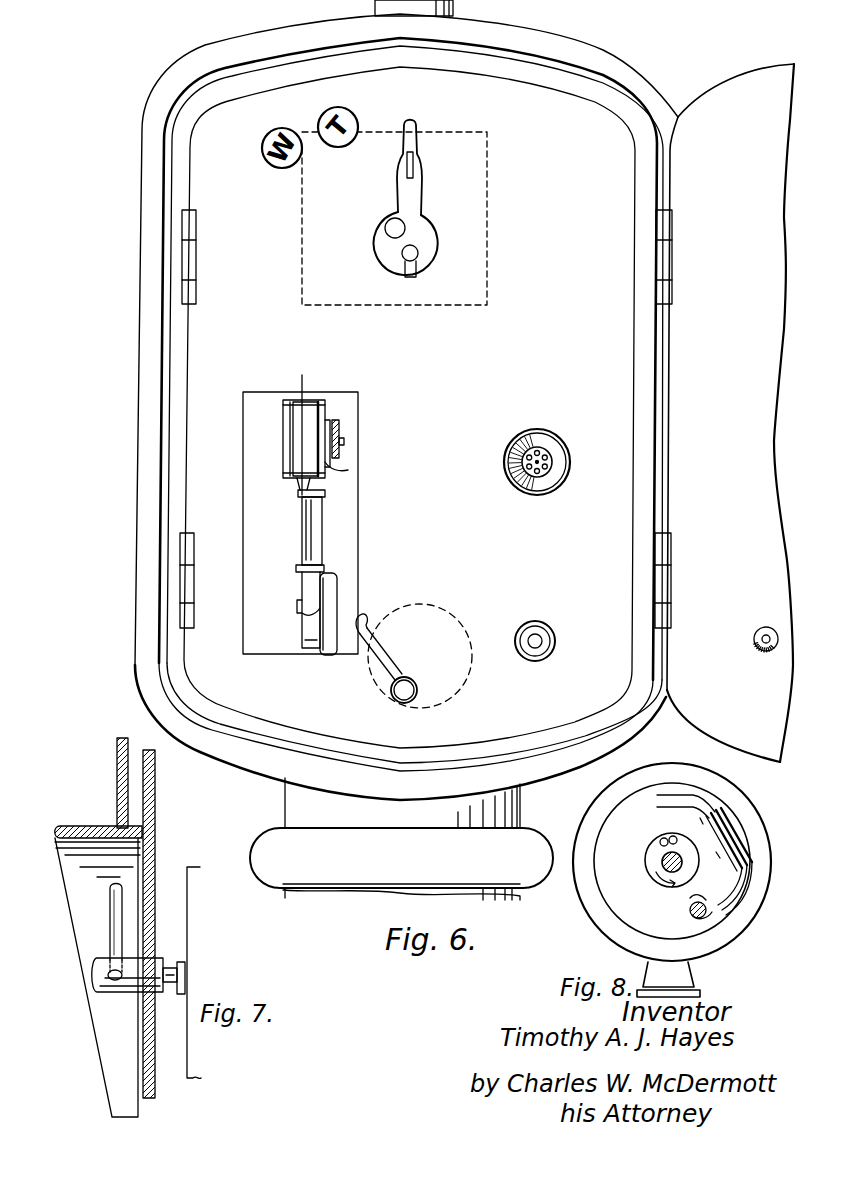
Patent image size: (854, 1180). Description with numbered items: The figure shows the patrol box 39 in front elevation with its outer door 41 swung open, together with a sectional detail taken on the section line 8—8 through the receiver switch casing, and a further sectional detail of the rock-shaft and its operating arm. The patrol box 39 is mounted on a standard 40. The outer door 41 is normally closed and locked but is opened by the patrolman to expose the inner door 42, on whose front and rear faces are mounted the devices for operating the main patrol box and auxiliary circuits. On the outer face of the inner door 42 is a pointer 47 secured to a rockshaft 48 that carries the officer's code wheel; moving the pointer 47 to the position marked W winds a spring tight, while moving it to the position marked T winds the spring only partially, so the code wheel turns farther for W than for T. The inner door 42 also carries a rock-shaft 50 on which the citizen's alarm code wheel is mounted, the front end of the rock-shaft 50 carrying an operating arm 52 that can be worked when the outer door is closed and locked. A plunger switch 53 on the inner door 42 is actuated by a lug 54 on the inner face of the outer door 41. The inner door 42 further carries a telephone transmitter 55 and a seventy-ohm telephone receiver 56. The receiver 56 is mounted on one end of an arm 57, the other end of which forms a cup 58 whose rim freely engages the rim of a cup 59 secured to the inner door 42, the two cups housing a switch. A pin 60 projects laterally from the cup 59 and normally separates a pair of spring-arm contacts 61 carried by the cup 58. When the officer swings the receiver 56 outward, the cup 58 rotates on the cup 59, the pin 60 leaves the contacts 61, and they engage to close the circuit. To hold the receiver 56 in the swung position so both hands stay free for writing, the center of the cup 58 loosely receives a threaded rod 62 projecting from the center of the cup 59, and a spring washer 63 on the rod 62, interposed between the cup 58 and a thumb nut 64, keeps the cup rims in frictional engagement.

In FIG. 6, the section line 8— 8 is at (302, 375).
In FIG. 6, the patrol box 39 is at (147, 527).
In FIG. 6, the standard 40 is at (267, 845).
In FIG. 6, the outer door 41 is at (723, 96).
In FIG. 7, the outer door 41 is at (118, 773).
In FIG. 6, the inner door 42 is at (205, 130).
In FIG. 7, the inner door 42 is at (155, 792).
In FIG. 6, the pointer 47 is at (412, 202).
In FIG. 6, the rockshaft 48 is at (414, 257).
In FIG. 6, the rock-shaft 50 is at (403, 697).
In FIG. 7, the rock-shaft 50 is at (168, 963).
In FIG. 6, the operating arm 52 is at (365, 655).
In FIG. 7, the operating arm 52 is at (107, 912).
In FIG. 6, the plunger switch 53 is at (537, 641).
In FIG. 6, the lug 54 is at (763, 635).
In FIG. 6, the telephone transmitter 55 is at (550, 470).
In FIG. 6, the telephone receiver 56 is at (335, 593).
In FIG. 6, the arm 57 is at (317, 543).
In FIG. 6, the cup 58 is at (313, 418).
In FIG. 6, the cup 59 is at (292, 441).
In FIG. 8, the pin 60 is at (690, 910).
In FIG. 8, the contacts 61 is at (707, 902).
In FIG. 6, the threaded rod 62 is at (345, 443).
In FIG. 8, the threaded rod 62 is at (660, 860).
In FIG. 6, the spring washer 63 is at (325, 460).
In FIG. 6, the thumb nut 64 is at (338, 430).